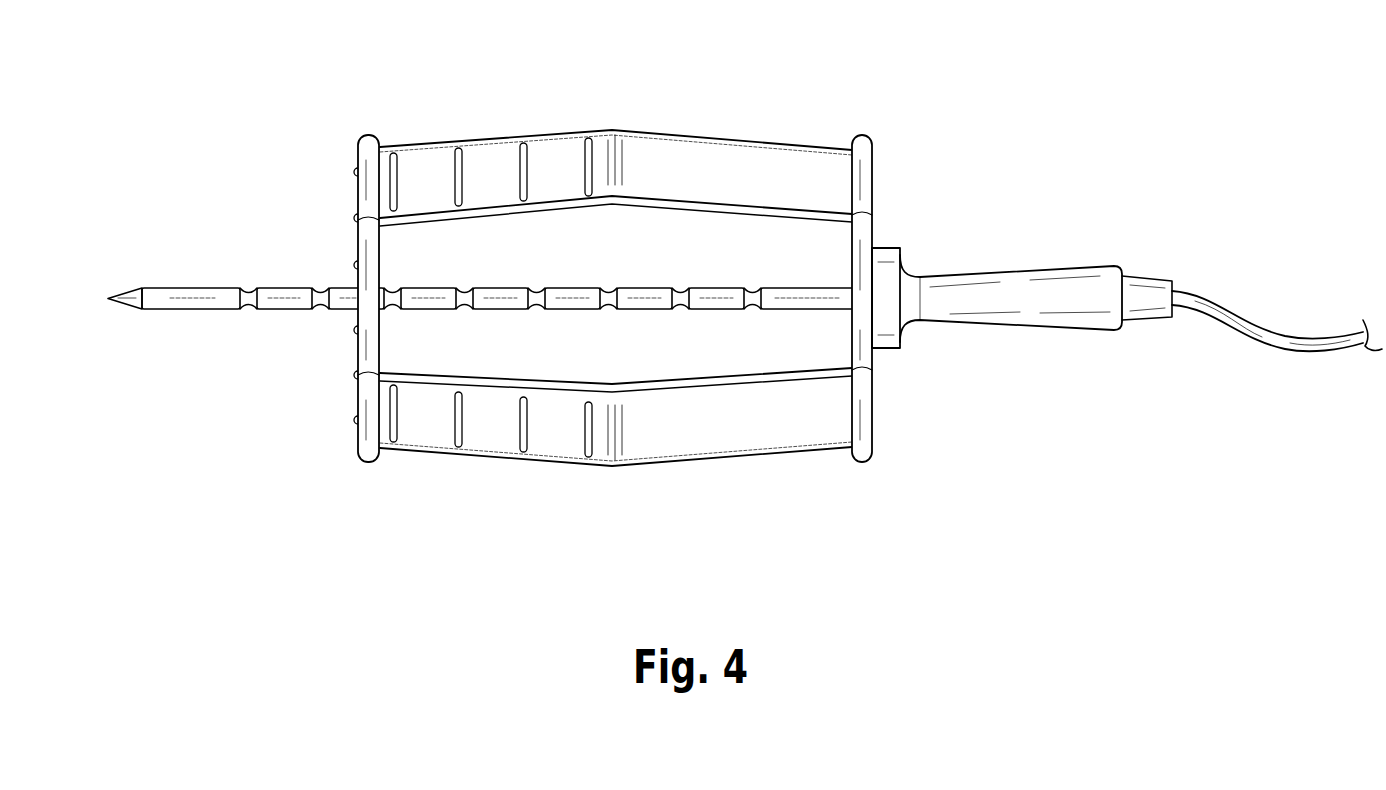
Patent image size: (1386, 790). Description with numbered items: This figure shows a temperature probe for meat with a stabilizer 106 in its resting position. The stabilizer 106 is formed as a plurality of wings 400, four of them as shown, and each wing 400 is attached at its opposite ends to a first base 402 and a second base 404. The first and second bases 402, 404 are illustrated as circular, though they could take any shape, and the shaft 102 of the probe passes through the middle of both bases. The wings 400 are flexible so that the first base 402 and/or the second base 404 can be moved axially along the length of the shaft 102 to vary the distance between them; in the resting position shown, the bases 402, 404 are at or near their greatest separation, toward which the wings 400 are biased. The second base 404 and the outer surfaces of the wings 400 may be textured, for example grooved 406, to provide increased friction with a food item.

The shaft 102 is at (253, 224).
The stabilizer 106 is at (490, 294).
The wing 400 is at (560, 166).
The first base 402 is at (873, 238).
The second base 404 is at (356, 330).
The grooved texture 406 is at (454, 420).